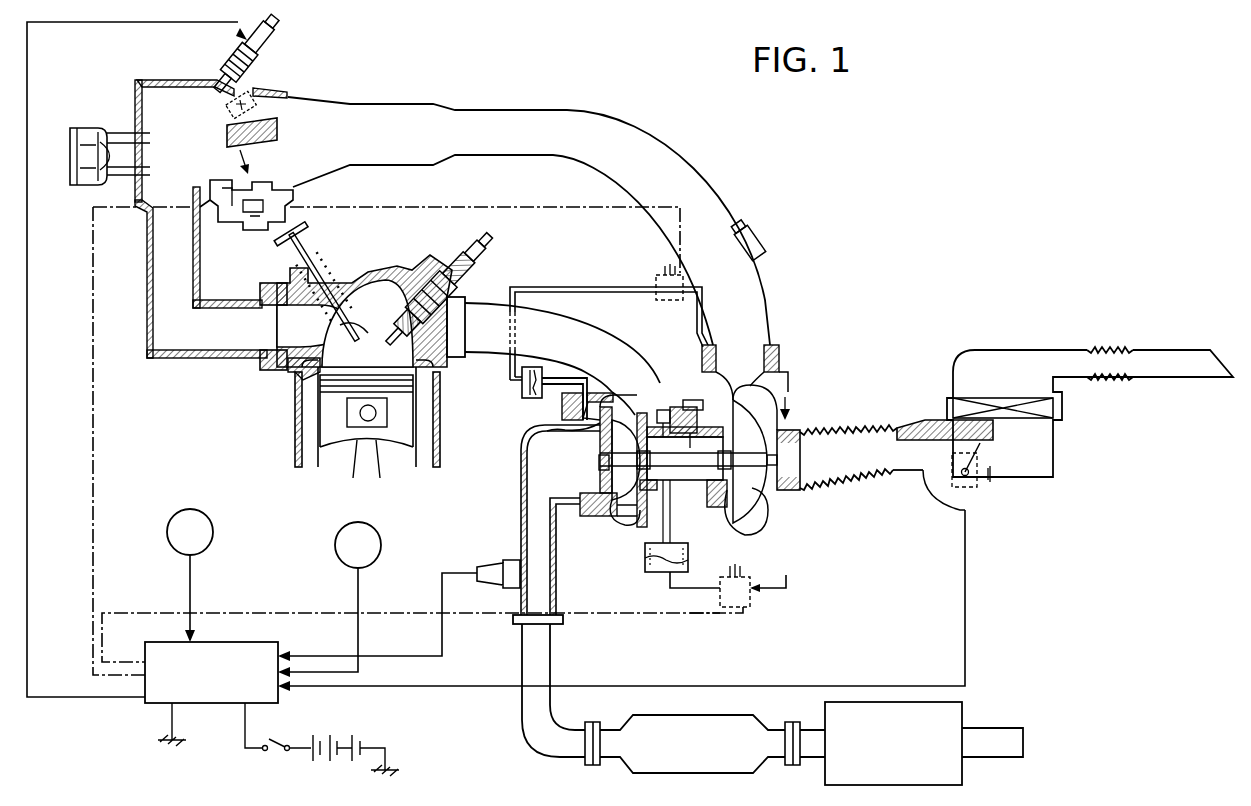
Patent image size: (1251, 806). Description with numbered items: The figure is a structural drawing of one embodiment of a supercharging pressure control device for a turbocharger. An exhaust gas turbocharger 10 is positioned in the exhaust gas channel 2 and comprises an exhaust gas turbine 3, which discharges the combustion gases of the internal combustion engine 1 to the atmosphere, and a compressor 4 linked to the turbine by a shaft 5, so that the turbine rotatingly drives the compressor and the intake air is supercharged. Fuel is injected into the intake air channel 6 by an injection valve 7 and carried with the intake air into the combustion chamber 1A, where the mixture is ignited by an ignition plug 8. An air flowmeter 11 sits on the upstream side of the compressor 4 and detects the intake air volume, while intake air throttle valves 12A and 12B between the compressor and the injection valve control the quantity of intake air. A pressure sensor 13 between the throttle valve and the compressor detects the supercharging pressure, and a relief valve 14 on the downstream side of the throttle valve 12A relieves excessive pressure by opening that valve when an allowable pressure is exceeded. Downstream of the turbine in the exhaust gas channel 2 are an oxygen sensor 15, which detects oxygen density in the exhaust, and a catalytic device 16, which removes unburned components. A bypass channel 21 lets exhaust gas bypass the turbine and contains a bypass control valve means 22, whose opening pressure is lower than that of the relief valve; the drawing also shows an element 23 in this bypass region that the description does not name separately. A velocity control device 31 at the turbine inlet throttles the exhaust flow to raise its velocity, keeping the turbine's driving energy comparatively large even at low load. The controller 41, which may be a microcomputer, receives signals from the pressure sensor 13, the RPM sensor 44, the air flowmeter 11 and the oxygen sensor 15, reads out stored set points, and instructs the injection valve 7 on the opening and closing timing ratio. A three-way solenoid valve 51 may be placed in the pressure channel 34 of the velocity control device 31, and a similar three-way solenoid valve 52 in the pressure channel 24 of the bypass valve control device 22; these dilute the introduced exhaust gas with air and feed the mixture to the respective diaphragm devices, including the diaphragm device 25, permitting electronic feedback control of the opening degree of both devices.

The internal combustion engine 1 is at (398, 258).
The combustion chamber 1A is at (297, 375).
The exhaust gas channel 2 is at (518, 498).
The exhaust gas turbine 3 is at (630, 468).
The compressor 4 is at (753, 478).
The shaft 5 is at (690, 462).
The intake air channel 6 is at (608, 112).
The injection valve 7 is at (274, 31).
The ignition plug 8 is at (493, 243).
The exhaust gas turbocharger 10 is at (689, 388).
The air flowmeter 11 is at (982, 484).
The intake air throttle valve 12A is at (258, 84).
The intake air throttle valve 12B is at (252, 148).
The pressure sensor 13 is at (706, 247).
The relief valve 14 is at (68, 166).
The oxygen sensor 15 is at (480, 566).
The catalytic device 16 is at (663, 713).
The bypass channel 21 is at (600, 423).
The bypass control valve means 22 is at (518, 403).
The wastegate valve 23 is at (562, 408).
The pressure channel 24 is at (577, 285).
The diaphragm device 25 is at (520, 394).
The velocity control device 31 is at (645, 574).
The pressure channel 34 is at (703, 613).
The controller 41 is at (148, 705).
The RPM sensor 44 is at (358, 545).
The three-way solenoid valve 51 is at (752, 596).
The three-way solenoid valve 52 is at (655, 273).